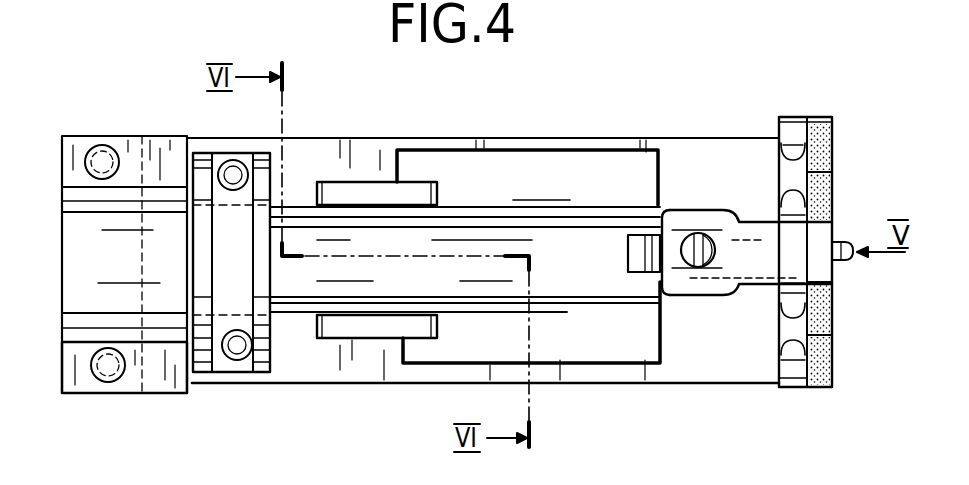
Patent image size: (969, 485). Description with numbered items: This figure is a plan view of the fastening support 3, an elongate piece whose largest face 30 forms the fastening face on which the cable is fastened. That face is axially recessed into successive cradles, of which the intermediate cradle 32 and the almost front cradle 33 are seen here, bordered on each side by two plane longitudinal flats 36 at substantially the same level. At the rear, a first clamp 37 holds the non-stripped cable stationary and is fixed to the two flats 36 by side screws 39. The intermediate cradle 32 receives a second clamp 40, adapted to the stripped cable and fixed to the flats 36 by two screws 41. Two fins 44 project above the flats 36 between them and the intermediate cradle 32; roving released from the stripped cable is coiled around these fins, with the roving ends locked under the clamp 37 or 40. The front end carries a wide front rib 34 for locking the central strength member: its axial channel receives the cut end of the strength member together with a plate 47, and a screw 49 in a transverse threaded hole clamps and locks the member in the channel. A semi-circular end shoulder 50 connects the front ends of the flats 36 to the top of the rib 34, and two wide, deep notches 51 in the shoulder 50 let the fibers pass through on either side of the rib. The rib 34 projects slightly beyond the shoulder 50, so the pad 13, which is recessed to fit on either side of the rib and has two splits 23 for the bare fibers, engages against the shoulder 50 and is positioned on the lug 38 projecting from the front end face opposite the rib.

The fastening support 3 is at (318, 124).
The pad 13 is at (823, 126).
The splits 23 is at (824, 340).
The largest face 30 is at (504, 196).
The intermediate cradle 32 is at (357, 232).
The almost front cradle 33 is at (550, 188).
The front rib 34 is at (759, 252).
The longitudinal flats 36 is at (448, 142).
The first clamp 37 is at (140, 157).
The lug 38 is at (851, 242).
The side screws 39 is at (122, 378).
The second clamp 40 is at (272, 338).
The screws 41 is at (243, 348).
The fins 44 is at (412, 195).
The plate 47 is at (628, 250).
The screw 49 is at (699, 237).
The end shoulder 50 is at (788, 199).
The notches 51 is at (798, 332).